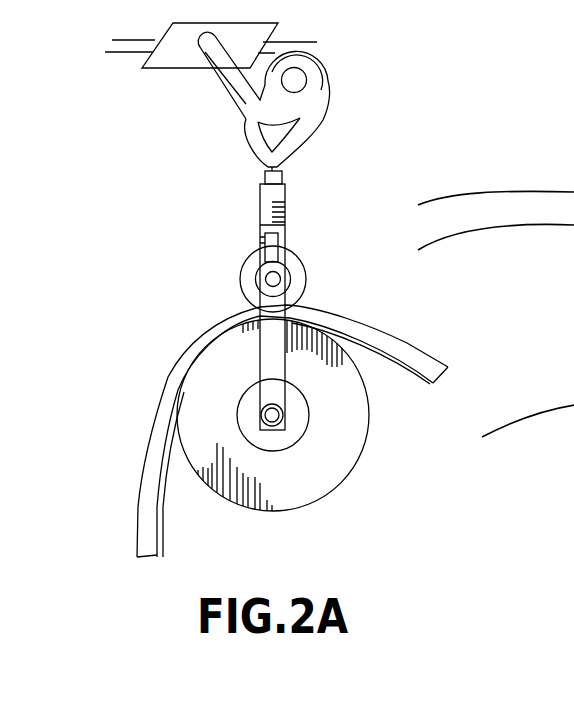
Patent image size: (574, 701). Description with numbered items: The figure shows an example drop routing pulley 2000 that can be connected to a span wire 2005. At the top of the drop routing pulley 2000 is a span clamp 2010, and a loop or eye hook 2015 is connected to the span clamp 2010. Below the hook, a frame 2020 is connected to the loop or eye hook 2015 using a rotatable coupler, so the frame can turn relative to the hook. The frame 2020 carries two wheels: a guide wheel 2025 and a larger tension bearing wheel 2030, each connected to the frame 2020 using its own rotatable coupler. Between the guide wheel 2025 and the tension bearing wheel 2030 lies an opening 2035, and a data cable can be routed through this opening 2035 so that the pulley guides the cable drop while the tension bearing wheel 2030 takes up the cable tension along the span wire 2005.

The drop routing pulley 2000 is at (104, 198).
The span wire 2005 is at (288, 42).
The span clamp 2010 is at (327, 77).
The loop or eye hook 2015 is at (300, 136).
The frame 2020 is at (287, 193).
The guide wheel 2025 is at (302, 268).
The tension bearing wheel 2030 is at (363, 437).
The opening 2035 is at (408, 340).